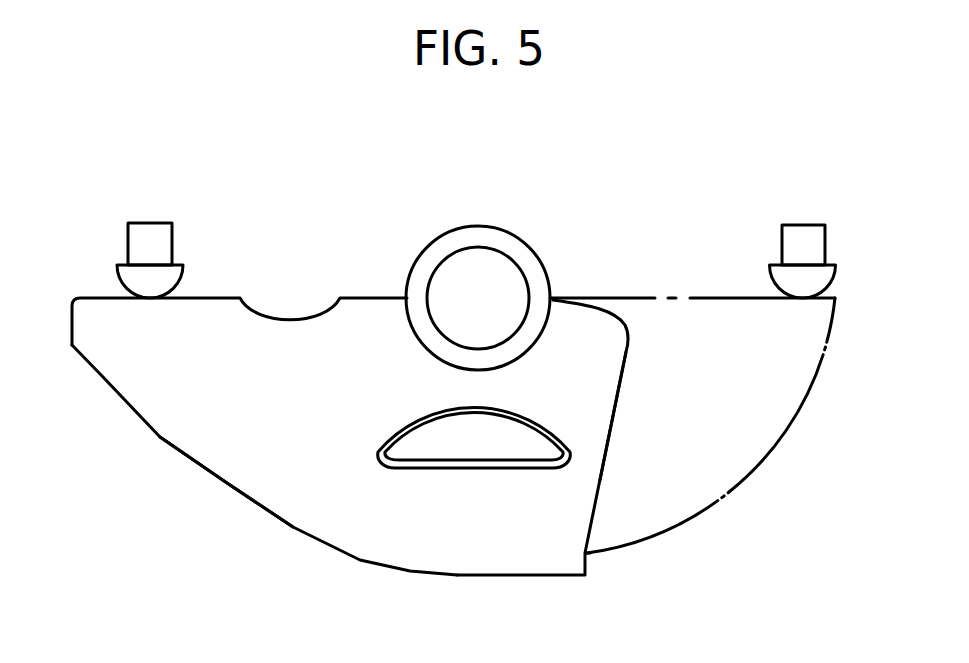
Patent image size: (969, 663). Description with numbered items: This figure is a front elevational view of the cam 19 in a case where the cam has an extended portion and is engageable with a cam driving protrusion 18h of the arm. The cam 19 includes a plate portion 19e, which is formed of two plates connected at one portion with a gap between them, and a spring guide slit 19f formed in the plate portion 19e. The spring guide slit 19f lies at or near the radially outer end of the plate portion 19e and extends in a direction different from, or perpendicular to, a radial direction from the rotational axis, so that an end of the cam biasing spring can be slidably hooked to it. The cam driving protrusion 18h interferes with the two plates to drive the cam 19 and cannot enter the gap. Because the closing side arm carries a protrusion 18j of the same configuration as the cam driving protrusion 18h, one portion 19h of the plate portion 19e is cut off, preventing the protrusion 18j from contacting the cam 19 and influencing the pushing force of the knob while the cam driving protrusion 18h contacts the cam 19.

The cam driving protrusion 18h is at (175, 272).
The protrusion 18j is at (785, 275).
The cam 19 is at (401, 574).
The plate portion 19e is at (312, 513).
The spring guide slit 19f is at (486, 444).
The cut-off portion 19h is at (617, 407).